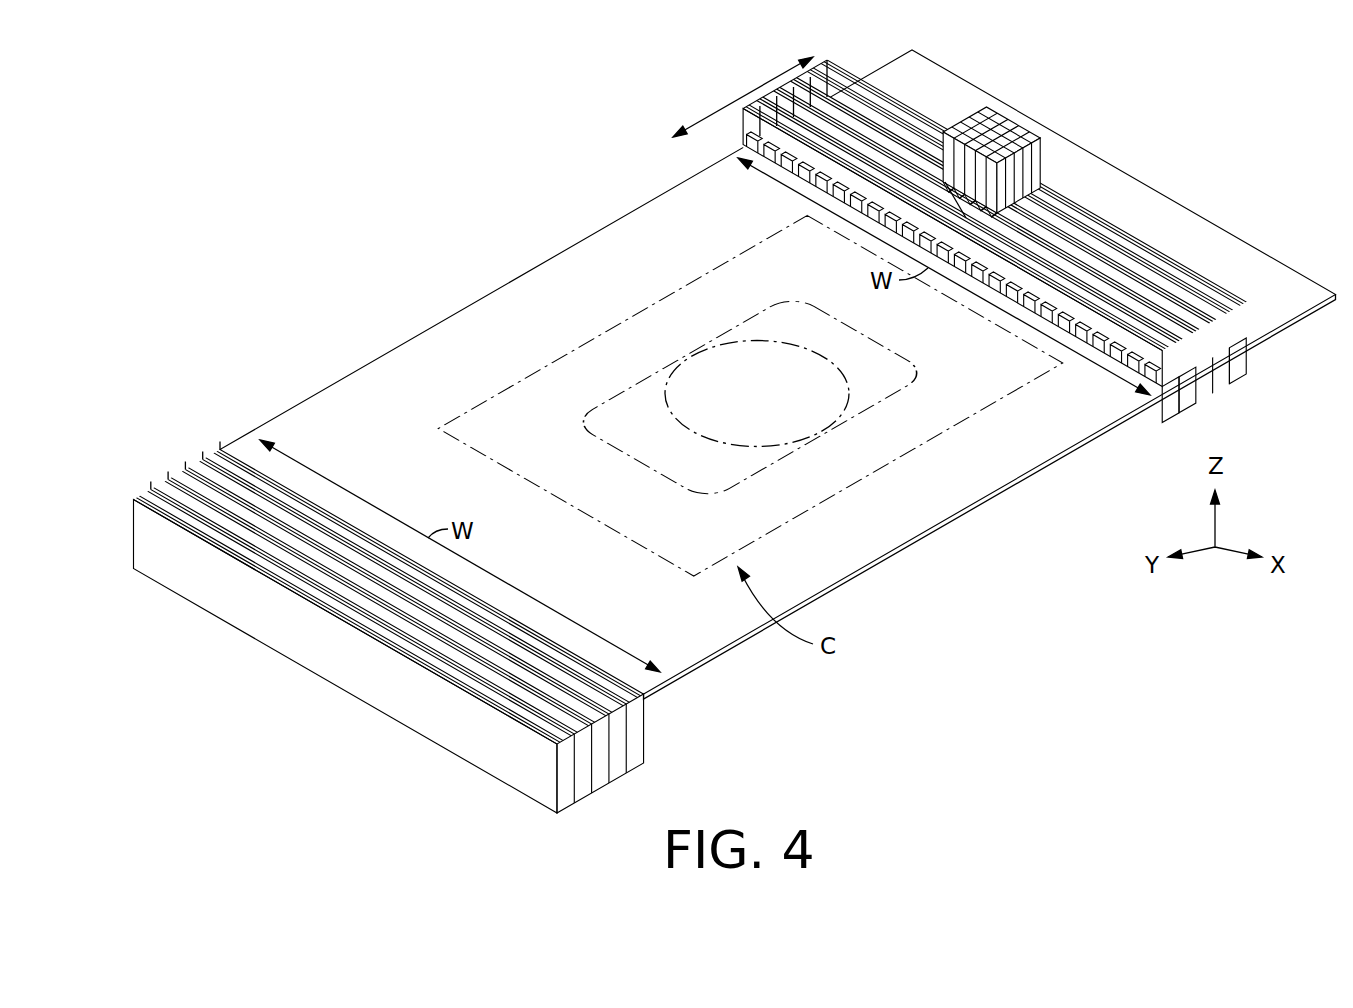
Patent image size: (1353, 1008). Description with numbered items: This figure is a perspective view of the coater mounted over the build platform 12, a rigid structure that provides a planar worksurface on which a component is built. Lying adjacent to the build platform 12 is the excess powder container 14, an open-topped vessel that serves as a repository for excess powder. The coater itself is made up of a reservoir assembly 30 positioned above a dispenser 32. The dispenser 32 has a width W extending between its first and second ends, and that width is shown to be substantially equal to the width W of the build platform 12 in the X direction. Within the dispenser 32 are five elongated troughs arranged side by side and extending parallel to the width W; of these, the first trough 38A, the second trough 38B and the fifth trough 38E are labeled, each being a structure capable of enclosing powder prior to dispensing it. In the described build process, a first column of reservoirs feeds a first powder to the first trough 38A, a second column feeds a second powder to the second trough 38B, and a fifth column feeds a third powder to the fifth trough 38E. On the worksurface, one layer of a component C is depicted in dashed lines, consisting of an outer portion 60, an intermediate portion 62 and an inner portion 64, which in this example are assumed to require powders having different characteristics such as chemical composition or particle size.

The build platform 12 is at (841, 565).
The excess powder container 14 is at (385, 693).
The reservoir assembly 30 is at (1062, 153).
The dispenser 32 is at (1041, 242).
The first trough 38A is at (1174, 374).
The second trough 38B is at (1191, 364).
The fifth trough 38E is at (1243, 333).
The outer portion 60 is at (871, 472).
The intermediate portion 62 is at (737, 494).
The inner portion 64 is at (727, 447).